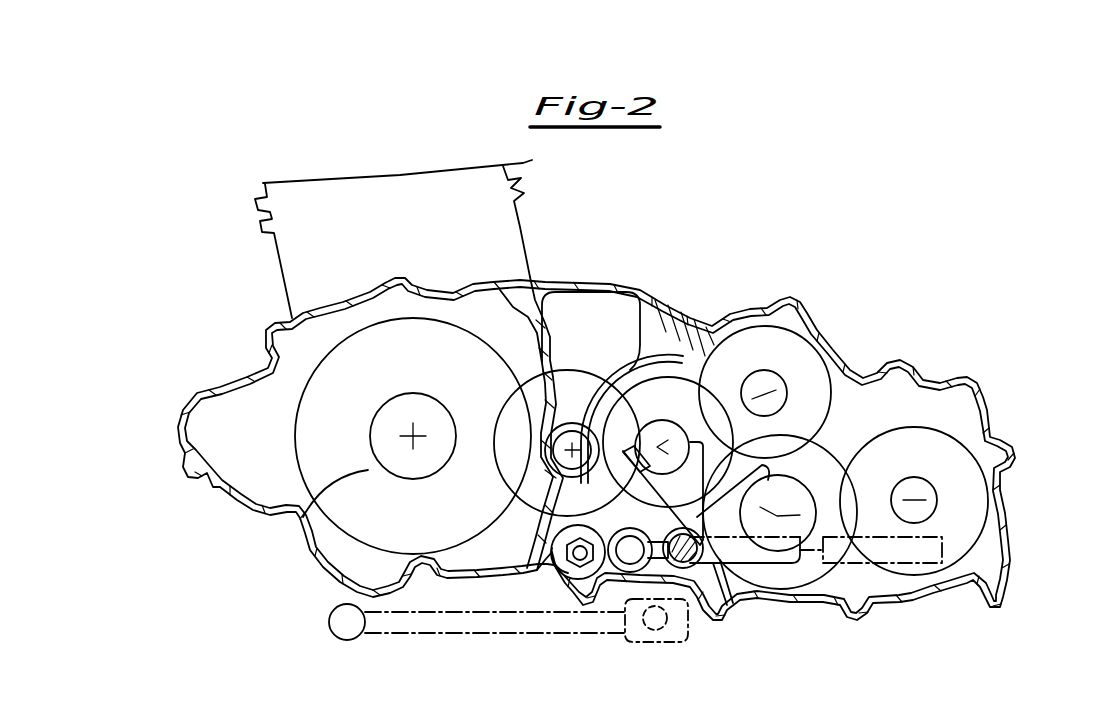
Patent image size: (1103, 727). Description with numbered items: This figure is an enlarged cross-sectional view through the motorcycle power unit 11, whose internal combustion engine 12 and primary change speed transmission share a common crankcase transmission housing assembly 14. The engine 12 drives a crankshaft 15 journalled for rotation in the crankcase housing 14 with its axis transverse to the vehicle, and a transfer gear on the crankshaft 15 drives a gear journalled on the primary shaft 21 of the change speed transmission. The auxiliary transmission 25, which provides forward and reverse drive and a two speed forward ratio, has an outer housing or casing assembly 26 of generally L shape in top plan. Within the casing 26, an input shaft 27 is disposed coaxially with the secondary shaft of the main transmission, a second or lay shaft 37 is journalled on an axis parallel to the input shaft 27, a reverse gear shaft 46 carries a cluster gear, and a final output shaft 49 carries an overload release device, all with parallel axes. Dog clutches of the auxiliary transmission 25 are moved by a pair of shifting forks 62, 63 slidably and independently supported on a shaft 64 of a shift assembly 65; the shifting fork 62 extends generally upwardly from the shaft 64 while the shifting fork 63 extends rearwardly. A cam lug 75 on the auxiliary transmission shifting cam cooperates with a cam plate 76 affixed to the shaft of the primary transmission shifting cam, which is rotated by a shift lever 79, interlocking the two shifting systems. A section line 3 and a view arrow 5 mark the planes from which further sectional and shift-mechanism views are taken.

The power unit 11 is at (268, 312).
The internal combustion engine 12 is at (518, 230).
The crankcase transmission housing assembly 14 is at (237, 508).
The crankshaft 15 is at (303, 517).
The primary shaft 21 is at (576, 428).
The auxiliary transmission unit 25 is at (707, 344).
The outer housing or casing assembly 26 is at (972, 379).
The input shaft 27 is at (664, 420).
The lay shaft 37 is at (806, 536).
The reverse gear shaft 46 is at (766, 376).
The final output shaft 49 is at (914, 523).
The shifting fork 62 is at (578, 432).
The shifting fork 63 is at (773, 572).
The shaft 64 is at (720, 570).
The shift assembly 65 is at (733, 574).
The cam lug 75 is at (566, 580).
The cam plate 76 is at (600, 578).
The shift lever 79 is at (405, 640).
The section line 3- 3 is at (858, 346).
The view arrow 5 is at (692, 570).